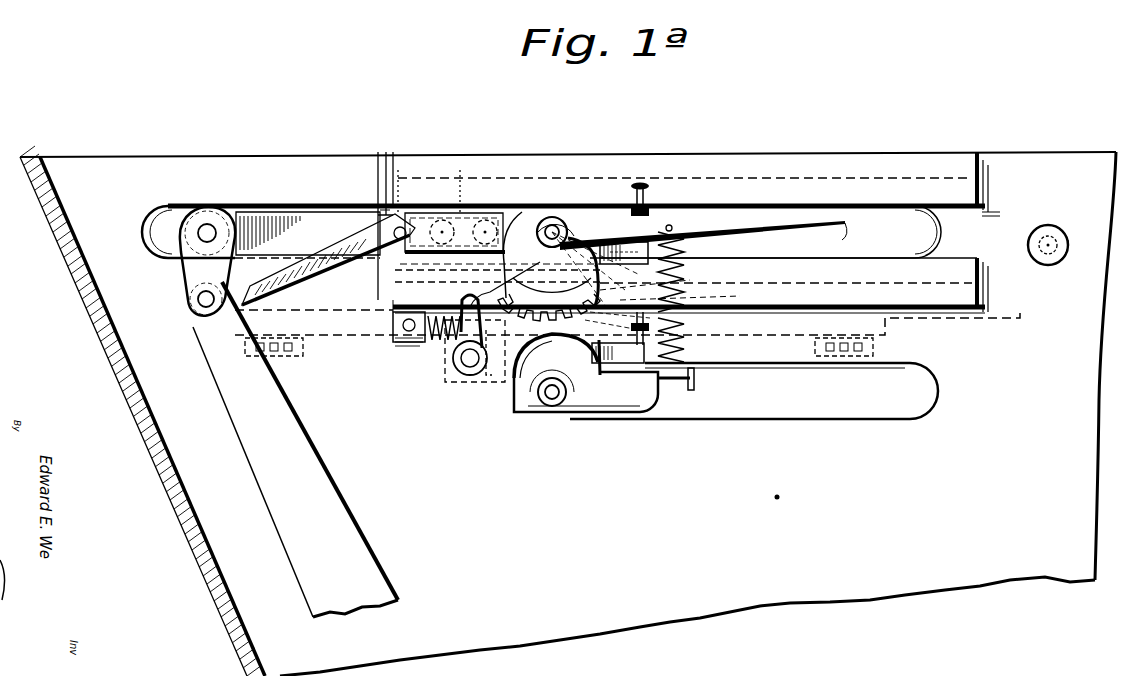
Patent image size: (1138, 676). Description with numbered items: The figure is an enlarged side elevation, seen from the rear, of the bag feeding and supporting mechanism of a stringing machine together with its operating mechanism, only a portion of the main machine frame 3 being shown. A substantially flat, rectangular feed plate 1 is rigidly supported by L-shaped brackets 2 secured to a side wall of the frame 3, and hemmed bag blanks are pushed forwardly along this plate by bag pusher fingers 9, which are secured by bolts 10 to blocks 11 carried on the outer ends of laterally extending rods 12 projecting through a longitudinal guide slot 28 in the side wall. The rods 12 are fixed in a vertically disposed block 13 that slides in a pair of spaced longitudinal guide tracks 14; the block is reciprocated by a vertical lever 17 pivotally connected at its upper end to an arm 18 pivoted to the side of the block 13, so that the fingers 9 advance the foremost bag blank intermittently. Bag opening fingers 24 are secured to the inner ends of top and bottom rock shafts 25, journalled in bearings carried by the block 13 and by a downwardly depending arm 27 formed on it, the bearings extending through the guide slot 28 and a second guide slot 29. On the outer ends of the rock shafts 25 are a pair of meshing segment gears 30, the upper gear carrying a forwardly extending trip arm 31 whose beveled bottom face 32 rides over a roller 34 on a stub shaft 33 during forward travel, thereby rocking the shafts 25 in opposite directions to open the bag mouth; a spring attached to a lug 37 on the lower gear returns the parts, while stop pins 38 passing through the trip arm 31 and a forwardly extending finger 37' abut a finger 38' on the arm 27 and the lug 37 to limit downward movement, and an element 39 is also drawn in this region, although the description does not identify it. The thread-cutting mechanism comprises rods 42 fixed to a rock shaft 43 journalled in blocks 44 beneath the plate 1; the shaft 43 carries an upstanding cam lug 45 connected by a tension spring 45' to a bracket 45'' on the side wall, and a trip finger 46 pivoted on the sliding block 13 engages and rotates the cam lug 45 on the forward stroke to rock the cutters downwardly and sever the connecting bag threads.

The feed plate 1 is at (340, 330).
The L-shaped brackets 2 is at (898, 347).
The main machine frame 3 is at (568, 411).
The bag pusher fingers 9 is at (569, 266).
The bolts 10 is at (455, 216).
The blocks 11 is at (429, 186).
The laterally extending rods 12 is at (497, 251).
The block 13 is at (380, 168).
The guide tracks 14 is at (520, 182).
The vertical lever 17 is at (357, 546).
The arm 18 is at (325, 262).
The bag opening fingers 24 is at (690, 285).
The rock shafts 25 is at (555, 230).
The downwardly depending arm 27 is at (487, 288).
The guide slot 28 is at (178, 207).
The second guide slot 29 is at (790, 418).
The segment gears 30 is at (582, 345).
The trip arm 31 is at (722, 235).
The beveled bottom face 32 is at (715, 238).
The stub shaft 33 is at (1048, 255).
The roller 34 is at (1056, 212).
The lug 37 is at (604, 411).
The forwardly extending finger 37' is at (656, 354).
The stop pins 38 is at (676, 240).
The forwardly extending finger 38' is at (616, 223).
The tension spring 39 is at (680, 268).
The rods 42 is at (488, 371).
The rock shaft 43 is at (468, 368).
The blocks 44 is at (445, 385).
The cam lug 45 is at (436, 343).
The tension spring 45' is at (396, 352).
The bracket 45'' is at (376, 306).
The trip finger 46 is at (195, 276).